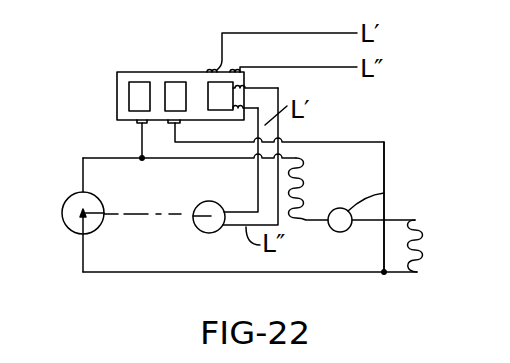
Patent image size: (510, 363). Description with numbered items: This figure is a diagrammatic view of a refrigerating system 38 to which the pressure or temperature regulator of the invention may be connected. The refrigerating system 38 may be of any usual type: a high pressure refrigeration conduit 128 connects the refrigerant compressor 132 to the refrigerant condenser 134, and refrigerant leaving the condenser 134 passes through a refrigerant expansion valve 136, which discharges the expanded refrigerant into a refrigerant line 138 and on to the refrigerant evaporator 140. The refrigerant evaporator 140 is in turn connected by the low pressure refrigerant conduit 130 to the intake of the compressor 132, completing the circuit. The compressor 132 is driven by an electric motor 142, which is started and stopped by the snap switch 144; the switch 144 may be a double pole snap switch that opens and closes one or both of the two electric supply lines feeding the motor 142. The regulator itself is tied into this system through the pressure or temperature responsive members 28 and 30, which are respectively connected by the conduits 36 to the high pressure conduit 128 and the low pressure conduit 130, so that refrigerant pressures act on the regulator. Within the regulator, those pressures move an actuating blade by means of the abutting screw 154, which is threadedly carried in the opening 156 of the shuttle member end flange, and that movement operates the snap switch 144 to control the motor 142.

The snap switch 144 is at (215, 88).
The pressure or temperature responsive member 28 is at (137, 123).
The pressure or temperature responsive member 30 is at (168, 124).
The conduits 36 is at (145, 152).
The high pressure refrigeration conduit 128 is at (187, 161).
The refrigerant compressor 132 is at (65, 213).
The electric motor 142 is at (207, 229).
The refrigerant condenser 134 is at (310, 182).
The refrigerant line 138 is at (357, 230).
The refrigerant expansion valve 136 is at (385, 190).
The refrigerant evaporator 140 is at (420, 245).
The low pressure refrigerant conduit 130 is at (250, 272).
The refrigerating system 38 is at (62, 293).
The abutting screw 154 is at (9, 88).
The opening 156 is at (0, 160).